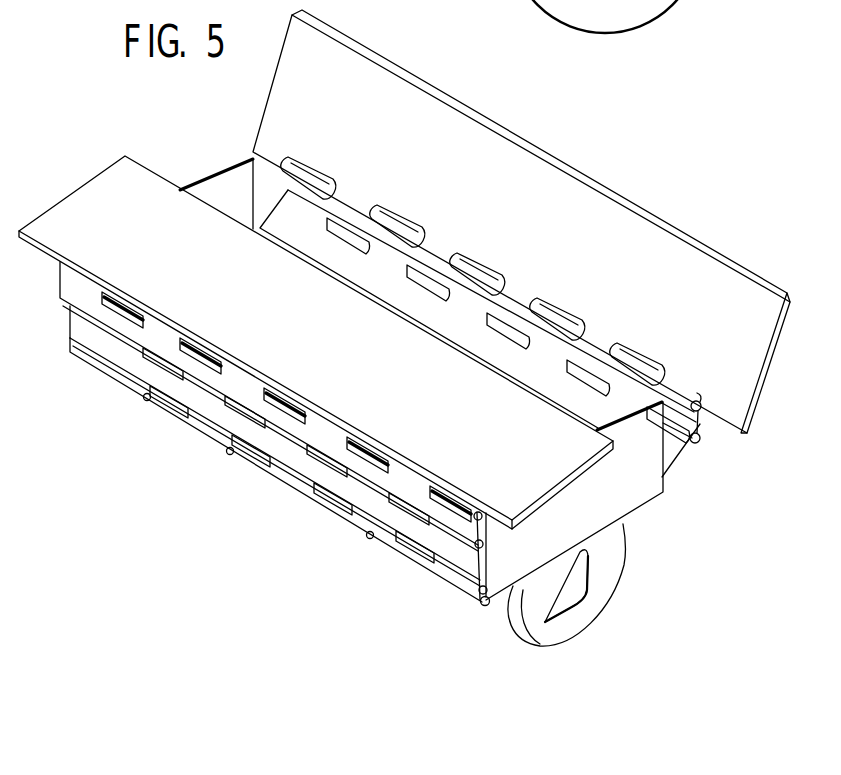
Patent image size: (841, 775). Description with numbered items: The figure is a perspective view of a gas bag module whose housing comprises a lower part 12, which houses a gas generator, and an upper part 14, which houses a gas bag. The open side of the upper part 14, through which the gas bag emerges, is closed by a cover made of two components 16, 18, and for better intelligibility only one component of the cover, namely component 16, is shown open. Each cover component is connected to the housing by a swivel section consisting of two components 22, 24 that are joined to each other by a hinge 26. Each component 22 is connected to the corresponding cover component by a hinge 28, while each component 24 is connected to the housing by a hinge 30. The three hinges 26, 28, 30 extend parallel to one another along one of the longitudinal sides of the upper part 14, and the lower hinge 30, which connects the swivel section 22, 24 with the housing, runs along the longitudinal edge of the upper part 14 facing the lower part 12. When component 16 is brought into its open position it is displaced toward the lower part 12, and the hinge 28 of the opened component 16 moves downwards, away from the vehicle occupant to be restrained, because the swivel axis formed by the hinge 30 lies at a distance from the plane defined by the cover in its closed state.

The lower part 12 is at (597, 583).
The upper part 14 is at (640, 498).
The cover component 16 is at (78, 201).
The cover component 18 is at (546, 178).
The swivel section component 22 is at (290, 440).
The swivel section component 24 is at (370, 510).
The hinge 26 is at (153, 367).
The hinge 28 is at (305, 172).
The hinge 30 is at (182, 405).